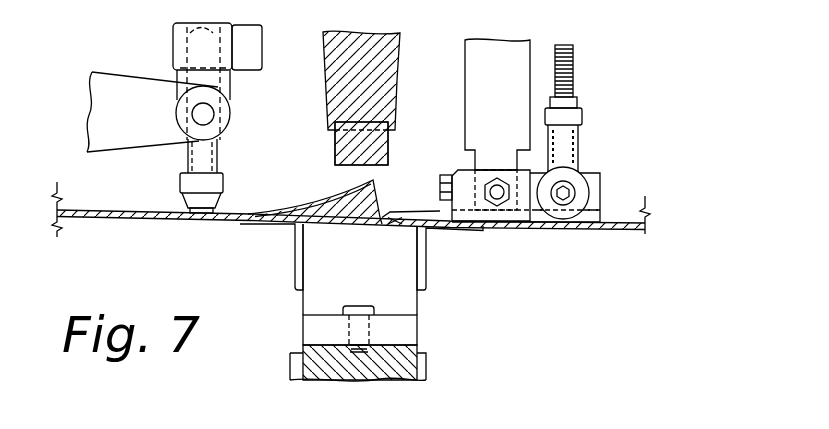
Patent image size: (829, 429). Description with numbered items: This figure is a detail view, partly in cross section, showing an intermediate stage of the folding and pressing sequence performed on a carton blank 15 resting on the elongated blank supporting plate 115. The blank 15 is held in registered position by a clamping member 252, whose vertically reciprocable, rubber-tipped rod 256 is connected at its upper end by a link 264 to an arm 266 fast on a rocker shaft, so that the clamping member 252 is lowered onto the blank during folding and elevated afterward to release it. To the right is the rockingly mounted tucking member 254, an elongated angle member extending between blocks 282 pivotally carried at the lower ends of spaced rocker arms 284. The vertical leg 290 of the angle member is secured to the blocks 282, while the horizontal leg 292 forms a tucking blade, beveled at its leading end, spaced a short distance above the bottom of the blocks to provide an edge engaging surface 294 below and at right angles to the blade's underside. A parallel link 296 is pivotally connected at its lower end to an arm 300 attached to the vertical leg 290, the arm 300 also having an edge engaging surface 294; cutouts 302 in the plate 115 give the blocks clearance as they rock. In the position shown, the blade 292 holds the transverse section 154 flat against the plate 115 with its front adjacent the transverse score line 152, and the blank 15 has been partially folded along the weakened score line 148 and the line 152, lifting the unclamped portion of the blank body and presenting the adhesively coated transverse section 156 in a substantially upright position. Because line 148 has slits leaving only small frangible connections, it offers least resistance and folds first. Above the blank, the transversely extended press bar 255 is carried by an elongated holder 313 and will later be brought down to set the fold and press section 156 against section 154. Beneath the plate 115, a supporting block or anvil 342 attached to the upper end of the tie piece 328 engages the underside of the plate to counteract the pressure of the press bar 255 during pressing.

The blank 15 is at (245, 212).
The elongated plate 115 is at (109, 219).
The weakened score line 148 is at (371, 181).
The transverse score line 152 is at (374, 192).
The transverse section 154 is at (405, 210).
The transverse section 156 is at (330, 224).
The clamping member 252 is at (180, 187).
The tucking member 254 is at (432, 200).
The press bar 255 is at (335, 133).
The vertically reciprocable rod 256 is at (185, 153).
The link 264 is at (225, 88).
The arm 266 is at (118, 82).
The block 282 is at (507, 224).
The rocker arm 284 is at (466, 105).
The vertical leg 290 is at (452, 170).
The horizontal leg 292 is at (400, 208).
The edge engaging surface 294 is at (457, 224).
The parallel link 296 is at (574, 72).
The arm 300 is at (540, 170).
The cutout 302 is at (415, 216).
The holder 313 is at (402, 54).
The tie piece 328 is at (380, 380).
The supporting block or anvil 342 is at (417, 305).